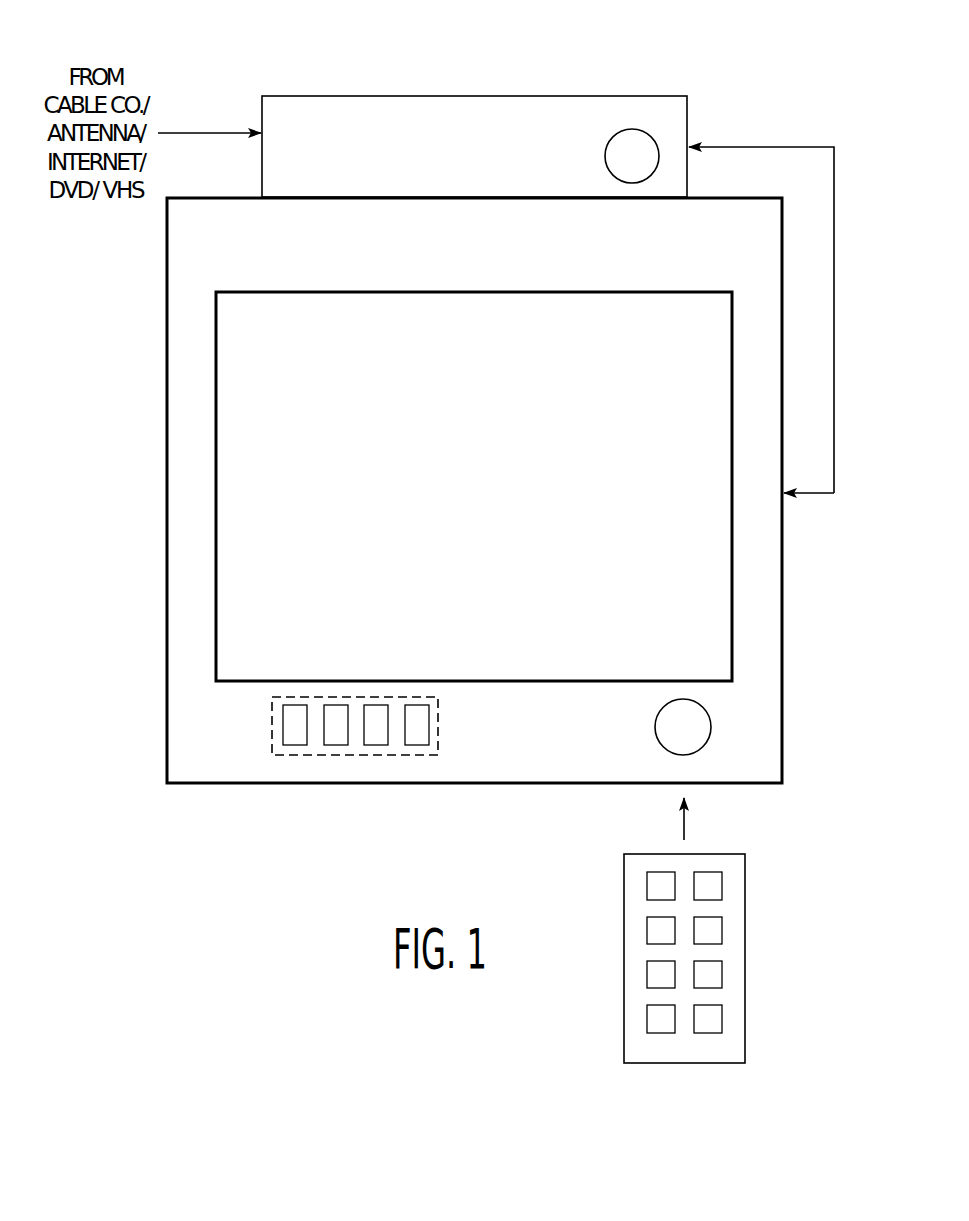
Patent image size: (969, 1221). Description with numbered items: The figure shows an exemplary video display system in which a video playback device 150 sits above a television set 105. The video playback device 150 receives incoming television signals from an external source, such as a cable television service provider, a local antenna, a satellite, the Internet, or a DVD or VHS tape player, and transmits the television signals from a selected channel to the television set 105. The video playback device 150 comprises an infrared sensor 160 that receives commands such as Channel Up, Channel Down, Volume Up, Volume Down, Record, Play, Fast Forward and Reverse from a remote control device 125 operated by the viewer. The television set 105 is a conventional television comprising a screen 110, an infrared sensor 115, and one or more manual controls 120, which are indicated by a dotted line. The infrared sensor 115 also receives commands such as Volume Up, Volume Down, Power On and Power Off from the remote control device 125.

The television set 105 is at (167, 617).
The screen 110 is at (216, 509).
The infrared (IR) sensor 115 is at (655, 727).
The manual controls 120 is at (355, 756).
The remote control device 125 is at (745, 955).
The video playback device 150 is at (481, 96).
The infrared (IR) sensor 160 is at (629, 129).